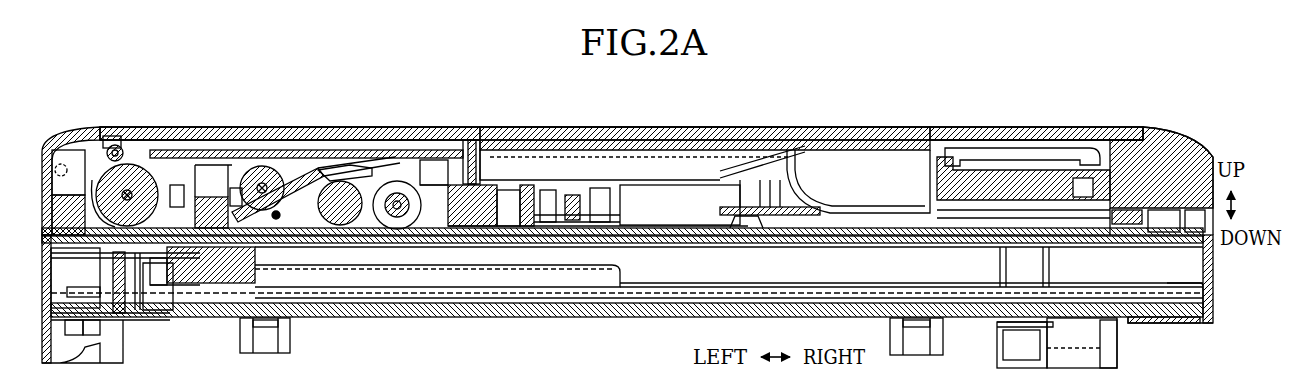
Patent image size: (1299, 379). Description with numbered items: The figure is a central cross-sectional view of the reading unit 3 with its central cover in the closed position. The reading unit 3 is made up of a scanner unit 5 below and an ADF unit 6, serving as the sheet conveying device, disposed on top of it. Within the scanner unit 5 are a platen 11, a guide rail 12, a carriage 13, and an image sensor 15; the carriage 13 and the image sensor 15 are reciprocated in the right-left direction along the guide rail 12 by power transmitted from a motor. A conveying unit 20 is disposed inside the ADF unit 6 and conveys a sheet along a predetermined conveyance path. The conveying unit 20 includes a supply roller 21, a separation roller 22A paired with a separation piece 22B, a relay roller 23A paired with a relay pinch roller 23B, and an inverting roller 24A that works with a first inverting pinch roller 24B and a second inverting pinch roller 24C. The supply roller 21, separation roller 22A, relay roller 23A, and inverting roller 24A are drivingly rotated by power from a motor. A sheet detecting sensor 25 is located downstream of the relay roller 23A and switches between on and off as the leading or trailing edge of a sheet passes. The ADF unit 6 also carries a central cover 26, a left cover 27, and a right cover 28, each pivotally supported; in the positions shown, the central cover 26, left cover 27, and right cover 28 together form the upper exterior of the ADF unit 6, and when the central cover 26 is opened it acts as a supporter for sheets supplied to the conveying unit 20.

The reading unit 3 is at (530, 110).
The scanner unit 5 is at (1207, 289).
The ADF unit 6 is at (1203, 158).
The platen 11 is at (665, 244).
The guide rail 12 is at (540, 288).
The carriage 13 is at (238, 284).
The image sensor 15 is at (200, 267).
The conveying unit 20 is at (226, 90).
The supply roller 21 is at (392, 185).
The separation roller 22A is at (344, 183).
The separation piece 22B is at (333, 173).
The relay roller 23A is at (263, 170).
The relay pinch roller 23B is at (280, 212).
The inverting roller 24A is at (135, 150).
The first inverting pinch roller 24B is at (177, 195).
The second inverting pinch roller 24C is at (113, 140).
The sheet detecting sensor 25 is at (239, 196).
The central cover 26 is at (780, 130).
The left cover 27 is at (413, 128).
The right cover 28 is at (1035, 128).